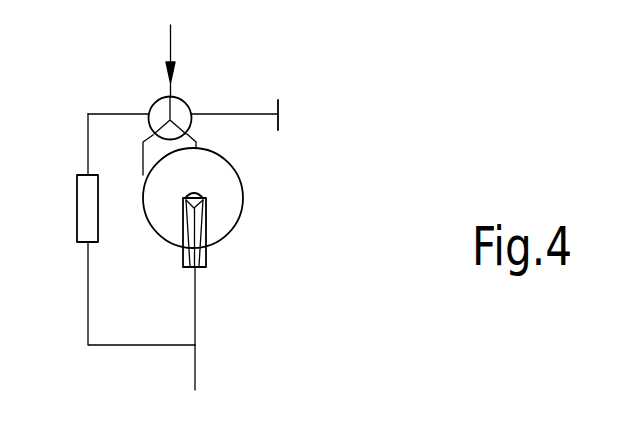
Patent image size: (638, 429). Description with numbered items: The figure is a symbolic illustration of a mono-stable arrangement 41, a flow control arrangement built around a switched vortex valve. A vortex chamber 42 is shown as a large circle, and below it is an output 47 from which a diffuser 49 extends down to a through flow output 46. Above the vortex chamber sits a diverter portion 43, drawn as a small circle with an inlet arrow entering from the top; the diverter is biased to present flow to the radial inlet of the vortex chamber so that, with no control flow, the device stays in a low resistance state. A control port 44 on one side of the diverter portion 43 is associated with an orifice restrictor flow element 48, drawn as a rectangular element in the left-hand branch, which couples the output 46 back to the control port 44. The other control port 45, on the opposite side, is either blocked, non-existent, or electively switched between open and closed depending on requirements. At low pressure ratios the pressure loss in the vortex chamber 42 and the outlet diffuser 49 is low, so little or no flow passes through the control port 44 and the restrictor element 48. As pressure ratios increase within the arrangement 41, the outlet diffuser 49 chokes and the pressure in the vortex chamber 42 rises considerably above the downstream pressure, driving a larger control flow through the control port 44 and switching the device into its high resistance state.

The mono-stable arrangement 41 is at (337, 177).
The vortex chamber 42 is at (228, 179).
The diverter portion 43 is at (184, 102).
The control port 44 is at (110, 112).
The control port 45 is at (254, 114).
The through flow output 46 is at (195, 372).
The output 47 is at (195, 305).
The resistor 48 is at (85, 212).
The diffuser 49 is at (209, 218).